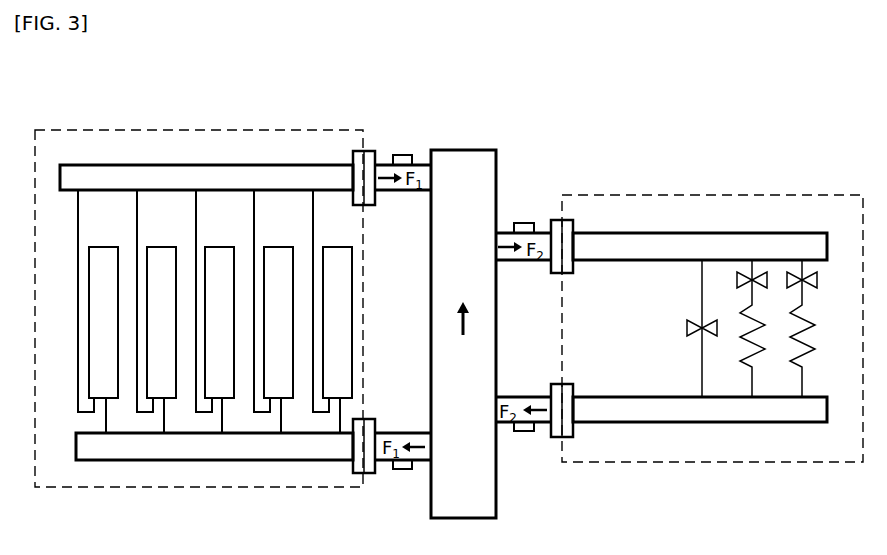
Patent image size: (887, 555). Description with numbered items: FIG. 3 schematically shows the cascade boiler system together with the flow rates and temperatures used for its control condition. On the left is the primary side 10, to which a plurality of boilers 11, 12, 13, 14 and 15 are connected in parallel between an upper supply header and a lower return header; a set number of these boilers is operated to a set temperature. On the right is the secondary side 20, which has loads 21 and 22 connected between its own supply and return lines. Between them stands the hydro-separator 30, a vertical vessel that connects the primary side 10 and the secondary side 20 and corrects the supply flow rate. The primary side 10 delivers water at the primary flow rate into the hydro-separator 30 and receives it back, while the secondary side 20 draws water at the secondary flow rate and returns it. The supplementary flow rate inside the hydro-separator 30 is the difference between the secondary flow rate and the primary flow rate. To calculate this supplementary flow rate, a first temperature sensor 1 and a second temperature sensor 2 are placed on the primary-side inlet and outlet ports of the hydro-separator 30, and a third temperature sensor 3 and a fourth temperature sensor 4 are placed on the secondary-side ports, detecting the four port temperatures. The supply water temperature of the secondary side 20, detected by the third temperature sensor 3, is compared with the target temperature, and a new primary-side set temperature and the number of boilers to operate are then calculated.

The first temperature sensor 1 is at (411, 155).
The second temperature sensor 2 is at (401, 470).
The third temperature sensor 3 is at (532, 223).
The fourth temperature sensor 4 is at (524, 432).
The primary side 10 is at (277, 129).
The boiler 11 is at (103, 247).
The boiler 12 is at (161, 247).
The boiler 13 is at (219, 247).
The boiler 14 is at (278, 247).
The boiler 15 is at (337, 247).
The secondary side 20 is at (643, 194).
The load 21 is at (760, 310).
The load 22 is at (810, 310).
The hydro-separator 30 is at (463, 150).